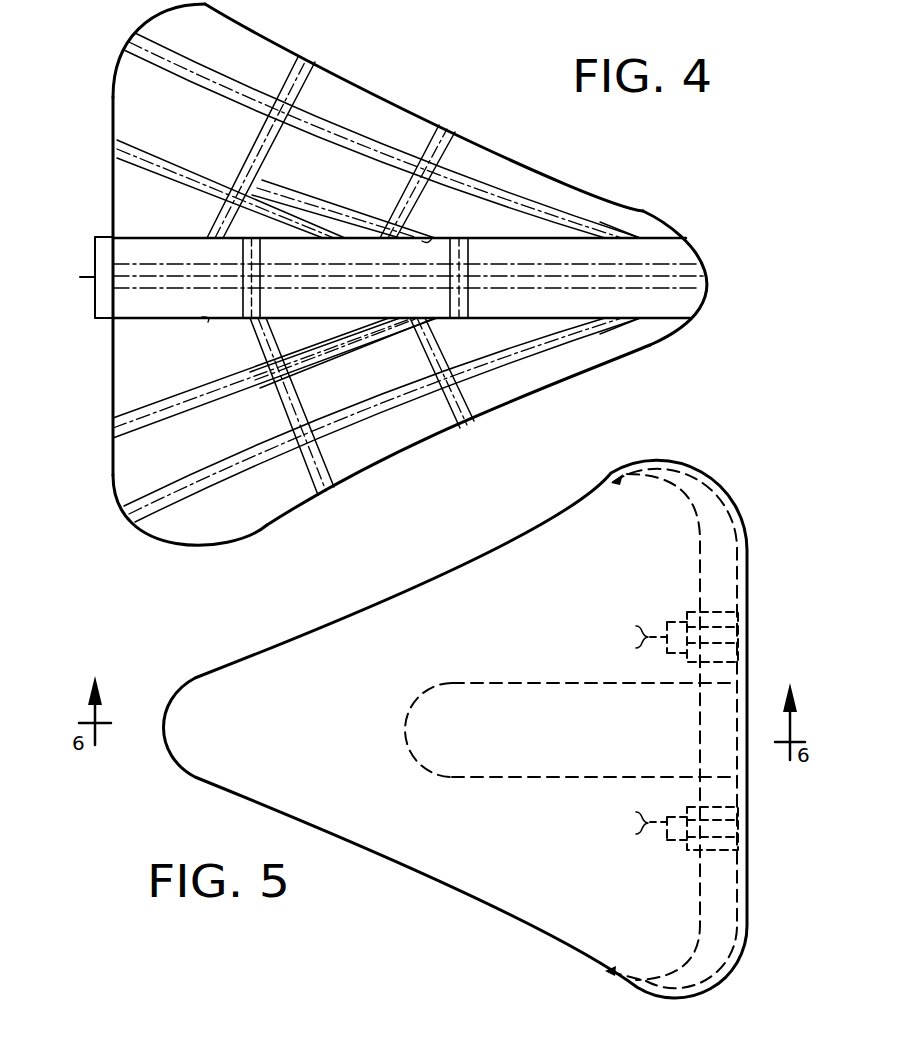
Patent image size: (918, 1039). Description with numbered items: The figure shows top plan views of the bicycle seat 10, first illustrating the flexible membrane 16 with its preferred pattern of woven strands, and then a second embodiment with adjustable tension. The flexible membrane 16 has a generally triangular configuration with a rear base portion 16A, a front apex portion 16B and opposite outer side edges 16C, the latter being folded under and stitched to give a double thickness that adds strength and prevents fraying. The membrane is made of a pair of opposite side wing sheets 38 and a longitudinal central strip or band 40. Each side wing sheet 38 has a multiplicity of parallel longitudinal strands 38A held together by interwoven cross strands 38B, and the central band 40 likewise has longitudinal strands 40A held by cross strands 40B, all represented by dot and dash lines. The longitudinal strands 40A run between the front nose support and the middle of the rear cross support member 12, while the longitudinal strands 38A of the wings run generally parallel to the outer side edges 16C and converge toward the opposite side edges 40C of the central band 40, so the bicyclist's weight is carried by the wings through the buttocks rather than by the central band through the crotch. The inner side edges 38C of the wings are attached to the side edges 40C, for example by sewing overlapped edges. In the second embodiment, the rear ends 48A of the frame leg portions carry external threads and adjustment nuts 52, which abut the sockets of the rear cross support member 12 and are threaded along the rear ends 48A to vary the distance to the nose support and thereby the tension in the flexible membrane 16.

In FIG. 5, the bicycle seat 10 is at (477, 734).
In FIG. 5, the rear cross support member 12 is at (690, 552).
In FIG. 4, the flexible membrane 16 is at (406, 274).
In FIG. 5, the flexible membrane 16 is at (388, 592).
In FIG. 4, the rear base portion 16A is at (127, 375).
In FIG. 4, the front apex portion 16B is at (690, 305).
In FIG. 4, the opposite outer side edges 16C is at (506, 158).
In FIG. 4, the side wing sheets 38 is at (376, 296).
In FIG. 4, the longitudinal strands of side wing sheets 38A is at (227, 90).
In FIG. 4, the cross strands of side wing sheets 38B is at (254, 188).
In FIG. 4, the inner side edges of side wing sheets 38C is at (428, 237).
In FIG. 4, the longitudinal central strip or band 40 is at (80, 277).
In FIG. 4, the longitudinal strands of central band 40A is at (677, 289).
In FIG. 4, the cross strands of central band 40B is at (240, 302).
In FIG. 4, the opposite side edges of central band 40C is at (628, 240).
In FIG. 5, the rear ends of leg portions 48A is at (630, 637).
In FIG. 5, the adjustment nuts 52 is at (672, 618).